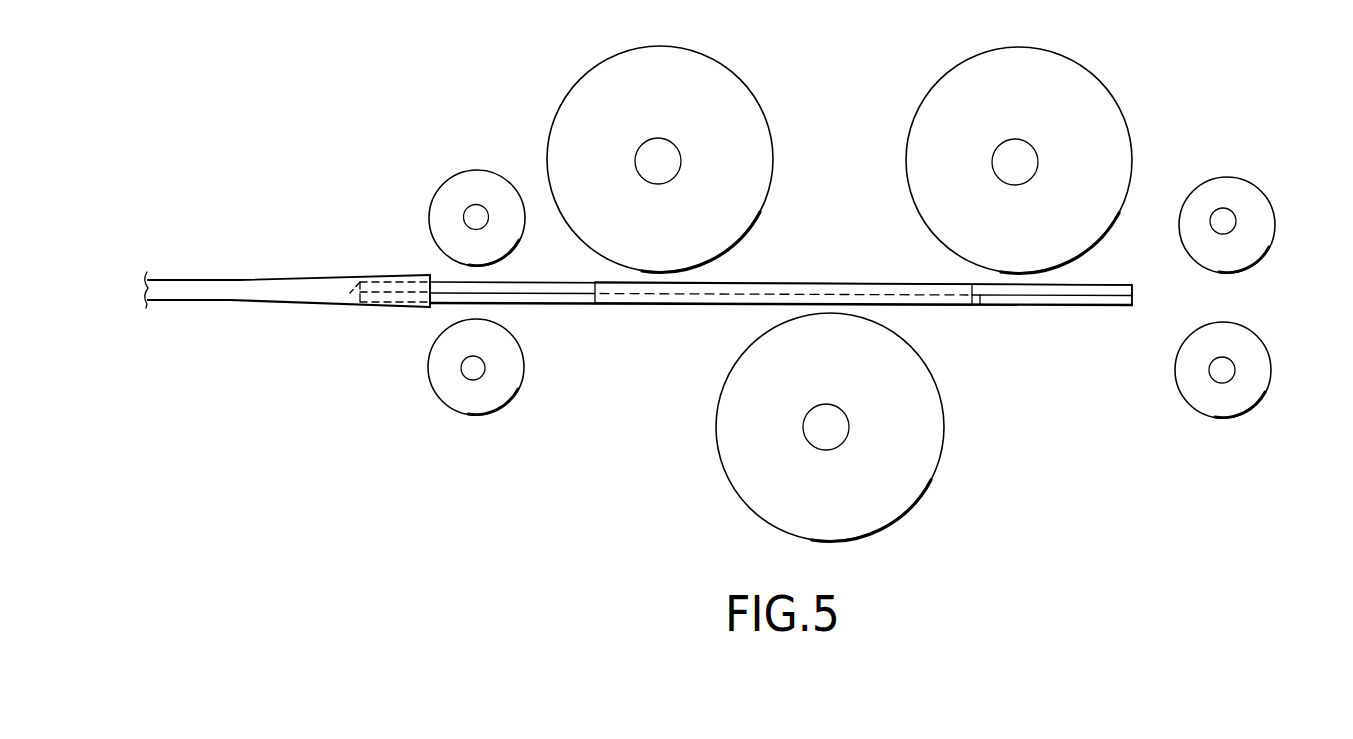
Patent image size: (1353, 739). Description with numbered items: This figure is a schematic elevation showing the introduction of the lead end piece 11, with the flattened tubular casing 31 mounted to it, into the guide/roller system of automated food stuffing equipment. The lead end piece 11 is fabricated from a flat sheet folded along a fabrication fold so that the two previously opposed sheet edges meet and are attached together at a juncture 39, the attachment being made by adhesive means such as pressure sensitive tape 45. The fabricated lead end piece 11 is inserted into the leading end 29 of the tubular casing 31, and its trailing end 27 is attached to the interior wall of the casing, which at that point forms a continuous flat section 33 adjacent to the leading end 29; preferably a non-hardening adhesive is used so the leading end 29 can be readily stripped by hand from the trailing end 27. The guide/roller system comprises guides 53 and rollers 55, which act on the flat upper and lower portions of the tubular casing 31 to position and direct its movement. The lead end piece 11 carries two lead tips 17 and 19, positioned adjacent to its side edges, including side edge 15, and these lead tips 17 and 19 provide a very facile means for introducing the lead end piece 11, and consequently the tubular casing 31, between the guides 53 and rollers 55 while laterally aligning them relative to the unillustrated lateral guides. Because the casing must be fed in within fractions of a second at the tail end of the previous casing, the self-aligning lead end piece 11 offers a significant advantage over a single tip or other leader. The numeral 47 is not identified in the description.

The lead end piece 11 is at (802, 310).
The side edge 15 is at (1077, 290).
The lead tip 17 is at (1135, 307).
The lead tip 19 is at (1133, 288).
The trailing end 27 is at (360, 292).
The leading end 29 is at (437, 277).
The tubular casing 31 is at (185, 263).
The continuous flat section 33 is at (185, 302).
The juncture 39 is at (540, 290).
The pressure sensitive tape 45 is at (637, 304).
The end shaft section 47 is at (1027, 307).
The guides 53 is at (473, 178).
The rollers 55 is at (722, 77).